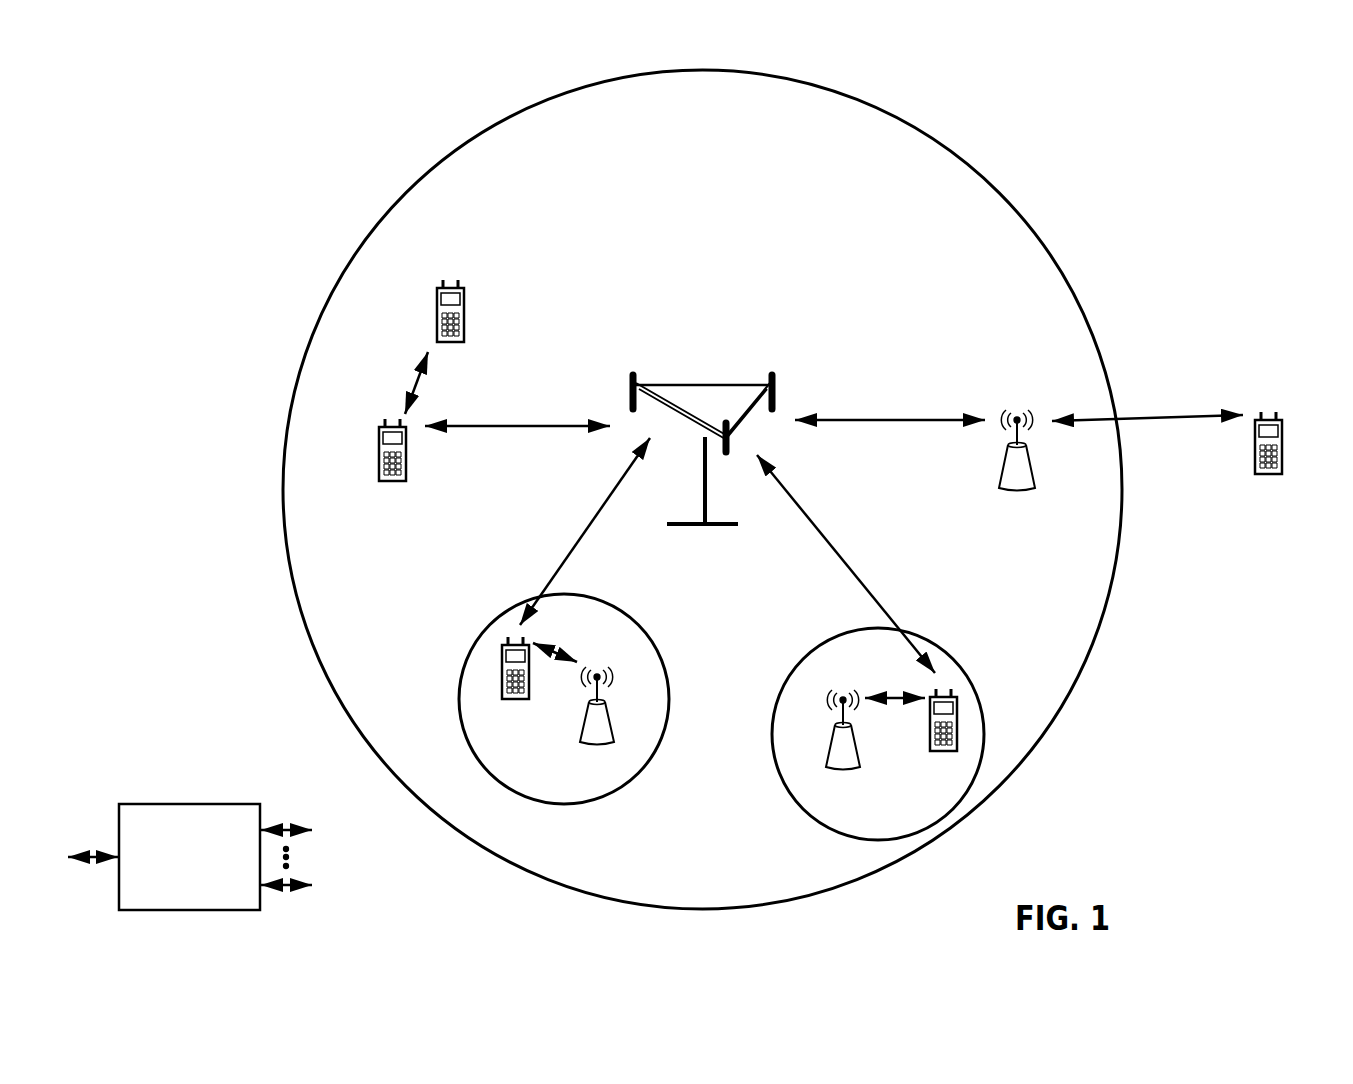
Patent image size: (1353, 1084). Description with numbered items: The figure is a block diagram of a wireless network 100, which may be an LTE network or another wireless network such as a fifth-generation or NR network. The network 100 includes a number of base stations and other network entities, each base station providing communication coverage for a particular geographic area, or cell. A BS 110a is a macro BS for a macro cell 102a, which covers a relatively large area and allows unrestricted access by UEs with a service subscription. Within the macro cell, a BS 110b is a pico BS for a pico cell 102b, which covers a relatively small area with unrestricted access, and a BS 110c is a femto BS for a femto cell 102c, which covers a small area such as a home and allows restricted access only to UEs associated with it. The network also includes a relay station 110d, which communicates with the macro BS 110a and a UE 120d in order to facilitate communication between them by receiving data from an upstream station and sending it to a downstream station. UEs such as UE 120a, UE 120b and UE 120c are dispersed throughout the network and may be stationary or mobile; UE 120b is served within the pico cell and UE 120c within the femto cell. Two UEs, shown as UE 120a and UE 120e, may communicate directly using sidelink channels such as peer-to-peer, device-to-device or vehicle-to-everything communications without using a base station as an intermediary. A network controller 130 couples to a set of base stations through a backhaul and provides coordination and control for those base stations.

The wireless network 100 is at (1172, 152).
The macro cell 102a is at (996, 161).
The pico cell 102b is at (640, 630).
The femto cell 102c is at (798, 664).
The macro BS 110a is at (700, 383).
The pico BS 110b is at (612, 728).
The femto BS 110c is at (828, 752).
The relay station 110d is at (1019, 414).
The UE 120a is at (380, 440).
The UE 120b is at (503, 692).
The UE 120c is at (930, 745).
The UE 120d is at (1283, 430).
The UE 120e is at (438, 300).
The network controller 130 is at (186, 804).